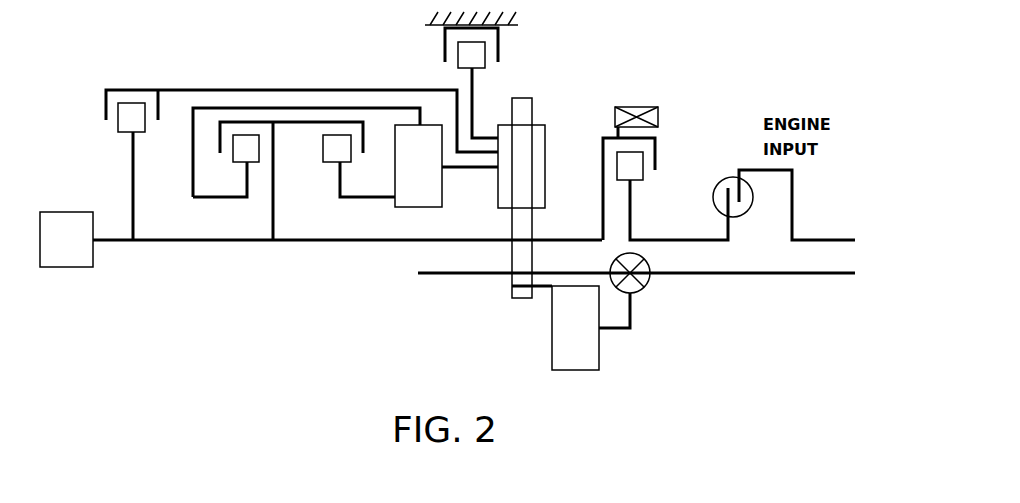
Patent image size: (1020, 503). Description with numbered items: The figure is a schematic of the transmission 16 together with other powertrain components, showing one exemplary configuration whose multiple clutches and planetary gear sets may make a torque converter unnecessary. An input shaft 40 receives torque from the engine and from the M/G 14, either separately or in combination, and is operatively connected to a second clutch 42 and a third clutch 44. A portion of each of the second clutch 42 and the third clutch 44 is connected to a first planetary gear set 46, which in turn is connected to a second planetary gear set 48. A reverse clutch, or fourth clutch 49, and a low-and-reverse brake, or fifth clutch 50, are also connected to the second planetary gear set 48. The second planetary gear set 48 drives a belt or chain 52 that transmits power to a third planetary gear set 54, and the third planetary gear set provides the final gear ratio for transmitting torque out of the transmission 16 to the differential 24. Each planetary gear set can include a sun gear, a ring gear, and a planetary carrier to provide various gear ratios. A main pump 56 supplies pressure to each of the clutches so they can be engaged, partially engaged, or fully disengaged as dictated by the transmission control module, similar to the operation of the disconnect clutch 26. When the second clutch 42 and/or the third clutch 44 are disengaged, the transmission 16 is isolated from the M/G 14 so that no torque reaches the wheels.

The M/G 14 is at (633, 107).
The transmission 16 is at (203, 328).
The differential 24 is at (647, 290).
The disconnect clutch 26 is at (656, 178).
The input shaft 40 is at (327, 243).
The second clutch 42 is at (216, 136).
The third clutch 44 is at (306, 136).
The first planetary gear set 46 is at (407, 208).
The second planetary gear set 48 is at (546, 177).
The fourth clutch 49 is at (102, 104).
The fifth clutch 50 is at (438, 47).
The belt or chain 52 is at (534, 107).
The third planetary gear set 54 is at (552, 335).
The main pump 56 is at (63, 212).